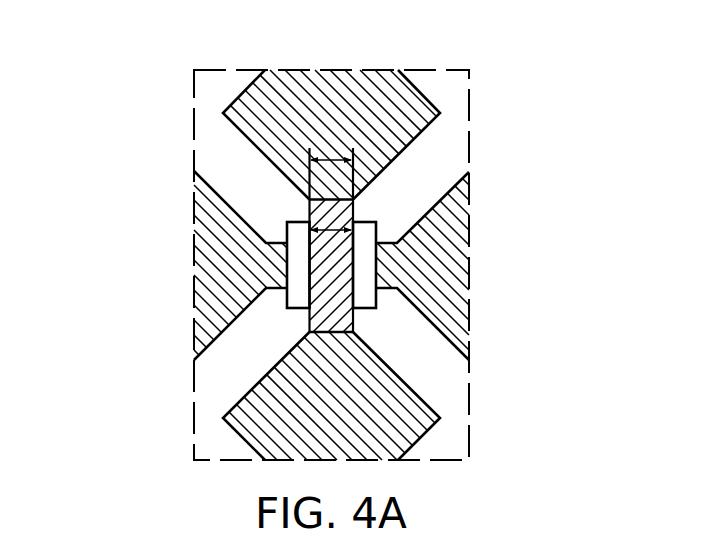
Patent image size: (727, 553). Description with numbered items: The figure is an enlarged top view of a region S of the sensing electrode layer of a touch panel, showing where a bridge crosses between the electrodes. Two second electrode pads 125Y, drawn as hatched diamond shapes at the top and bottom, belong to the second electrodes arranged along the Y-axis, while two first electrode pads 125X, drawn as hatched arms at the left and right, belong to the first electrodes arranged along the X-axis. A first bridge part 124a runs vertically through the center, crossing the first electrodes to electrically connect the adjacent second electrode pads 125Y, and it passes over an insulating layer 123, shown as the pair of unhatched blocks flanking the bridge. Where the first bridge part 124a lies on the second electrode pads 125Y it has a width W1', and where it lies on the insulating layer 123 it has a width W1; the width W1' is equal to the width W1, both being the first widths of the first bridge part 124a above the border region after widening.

The region S is at (147, 62).
The second electrode pads 125Y is at (273, 135).
The first electrode pads 125X is at (233, 258).
The insulating layer 123 is at (367, 263).
The first bridge part 124a is at (335, 312).
The width of first bridge part on second electrode pads W1' is at (440, 133).
The width of first bridge part on insulating layer W1 is at (435, 204).